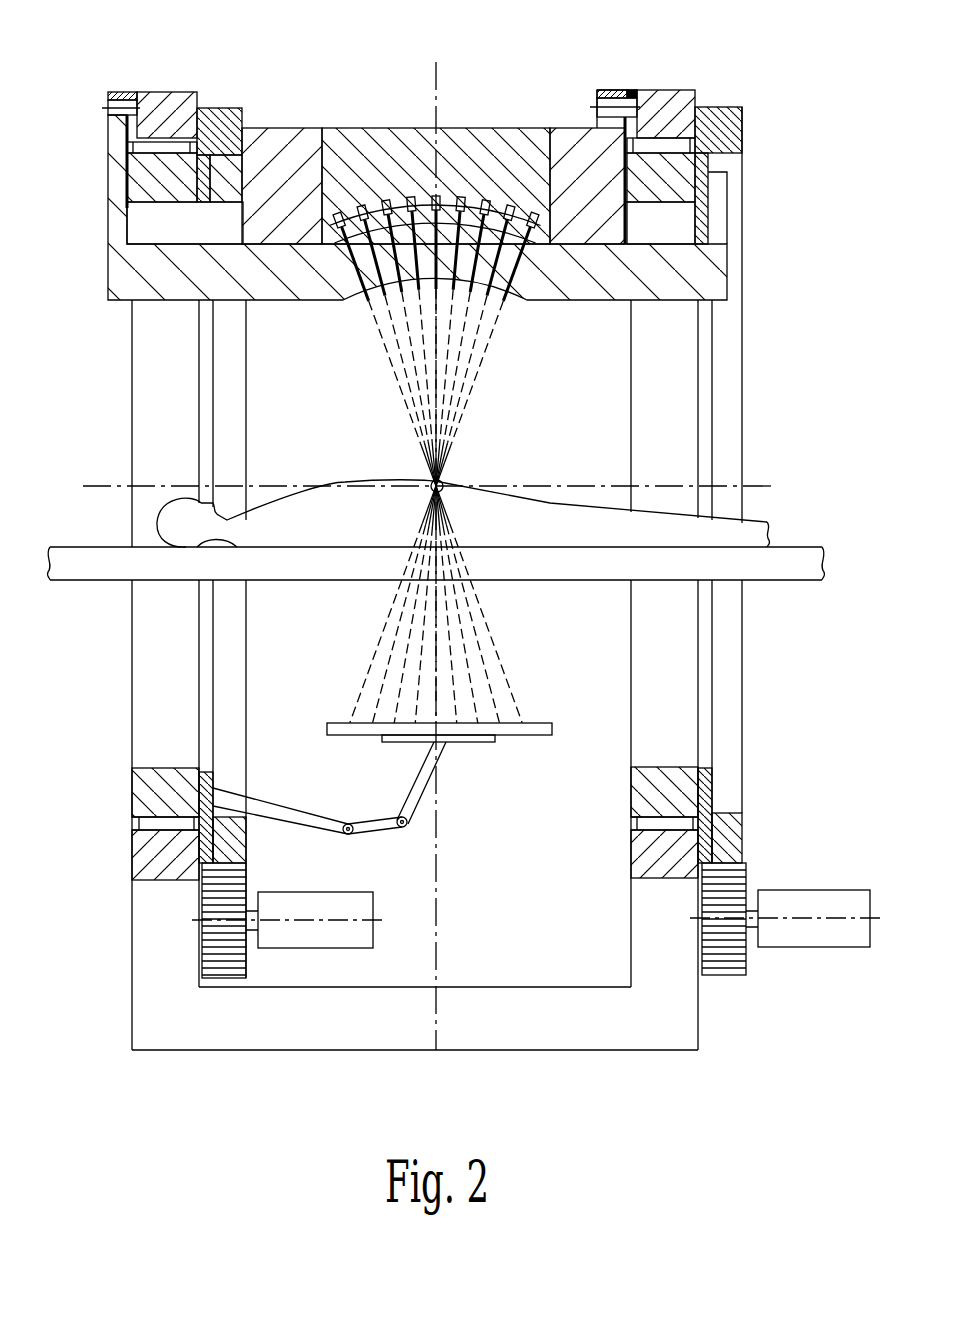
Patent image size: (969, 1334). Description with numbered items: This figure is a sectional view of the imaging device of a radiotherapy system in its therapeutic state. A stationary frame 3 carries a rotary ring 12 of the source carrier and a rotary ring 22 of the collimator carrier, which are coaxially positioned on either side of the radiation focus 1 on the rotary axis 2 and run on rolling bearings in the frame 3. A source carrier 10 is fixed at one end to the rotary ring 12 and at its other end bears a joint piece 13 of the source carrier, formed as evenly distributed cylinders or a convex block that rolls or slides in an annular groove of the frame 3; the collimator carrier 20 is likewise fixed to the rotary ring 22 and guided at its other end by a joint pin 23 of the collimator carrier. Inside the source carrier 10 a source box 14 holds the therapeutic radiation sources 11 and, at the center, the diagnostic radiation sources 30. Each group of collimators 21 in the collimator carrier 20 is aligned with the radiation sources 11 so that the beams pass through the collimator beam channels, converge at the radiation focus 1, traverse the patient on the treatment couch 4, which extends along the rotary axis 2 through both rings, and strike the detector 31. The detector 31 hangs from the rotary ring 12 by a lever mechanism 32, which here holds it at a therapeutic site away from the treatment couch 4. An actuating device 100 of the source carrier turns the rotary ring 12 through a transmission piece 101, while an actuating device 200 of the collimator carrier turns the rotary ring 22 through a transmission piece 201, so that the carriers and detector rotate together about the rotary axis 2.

The radiation focus 1 is at (445, 482).
The rotary axis 2 is at (442, 488).
The frame 3 is at (172, 120).
The treatment couch 4 is at (512, 565).
The source carrier 10 is at (520, 158).
The therapeutic radiation sources 11 is at (342, 198).
The rotary ring of source carrier 12 is at (218, 120).
The joint piece of source carrier 13 is at (612, 102).
The source box 14 is at (422, 175).
The collimator carrier 20 is at (688, 280).
The collimator 21 is at (512, 235).
The rotary ring of collimator carrier 22 is at (682, 167).
The joint pin of collimator carrier 23 is at (113, 93).
The diagnostic radiation sources 30 is at (441, 205).
The detector 31 is at (513, 727).
The lever mechanism 32 is at (377, 825).
The actuating device of source carrier 100 is at (317, 933).
The transmission piece of source carrier 101 is at (225, 887).
The actuating device of collimator carrier 200 is at (835, 932).
The transmission piece of collimator carrier 201 is at (725, 883).